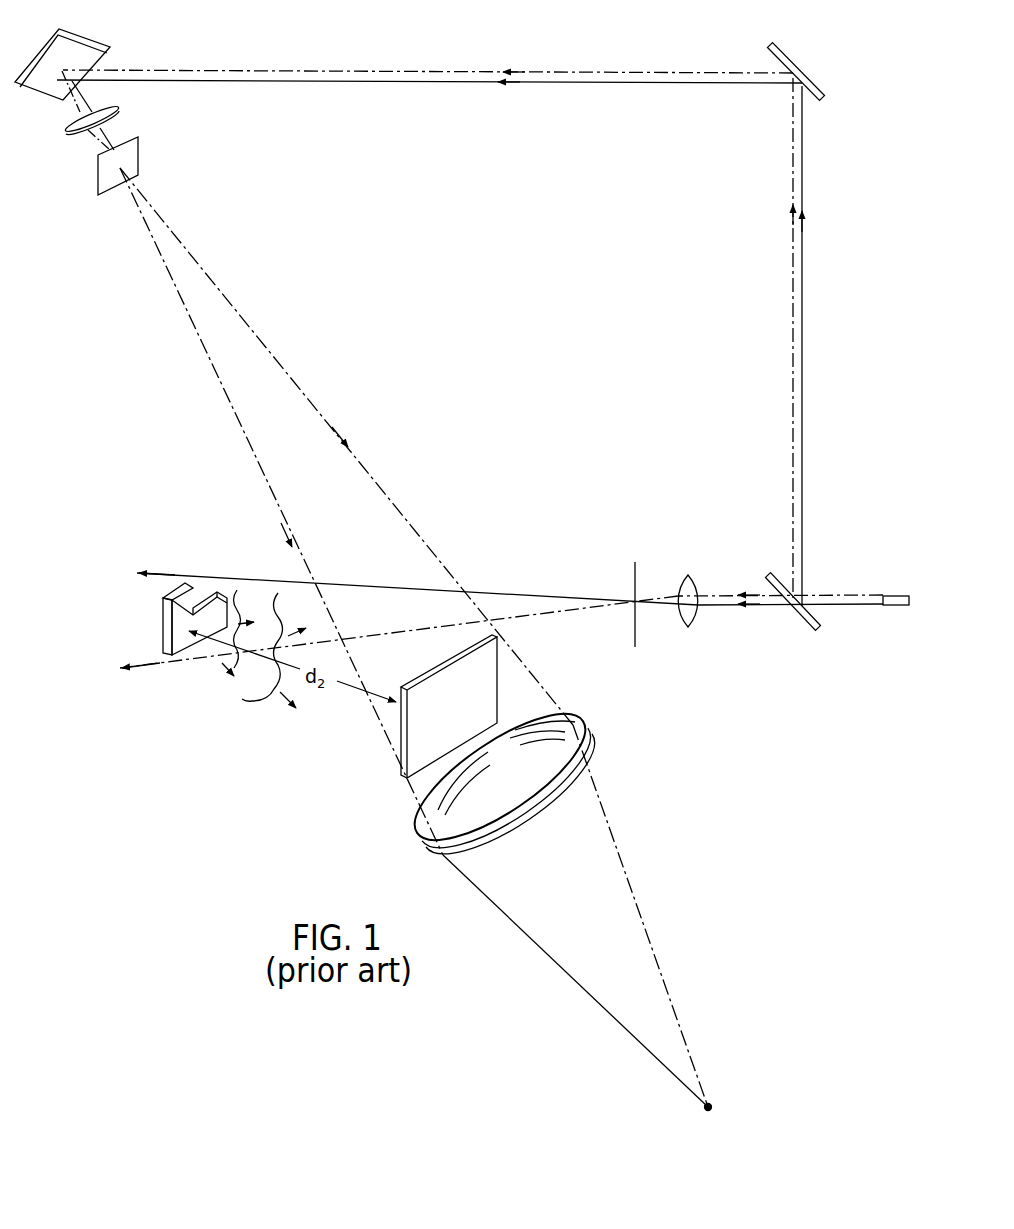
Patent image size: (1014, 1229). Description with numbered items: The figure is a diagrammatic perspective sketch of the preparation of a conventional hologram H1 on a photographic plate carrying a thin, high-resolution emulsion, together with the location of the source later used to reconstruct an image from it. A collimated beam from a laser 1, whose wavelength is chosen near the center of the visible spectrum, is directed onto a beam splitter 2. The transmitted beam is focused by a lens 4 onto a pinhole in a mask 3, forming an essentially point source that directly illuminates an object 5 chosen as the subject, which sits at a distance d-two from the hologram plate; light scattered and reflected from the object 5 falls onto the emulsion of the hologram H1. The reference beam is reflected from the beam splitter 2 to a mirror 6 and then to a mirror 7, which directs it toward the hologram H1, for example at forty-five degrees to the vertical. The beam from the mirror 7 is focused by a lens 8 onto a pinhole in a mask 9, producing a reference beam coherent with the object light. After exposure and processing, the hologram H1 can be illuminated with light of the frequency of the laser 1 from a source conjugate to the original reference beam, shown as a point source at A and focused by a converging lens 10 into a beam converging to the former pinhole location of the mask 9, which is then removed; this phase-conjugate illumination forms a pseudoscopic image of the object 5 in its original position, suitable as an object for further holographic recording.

The laser 1 is at (896, 606).
The beam splitter 2 is at (808, 628).
The mask 3 is at (637, 627).
The lens 4 is at (699, 612).
The object 5 is at (175, 633).
The mirror 6 is at (790, 62).
The mirror 7 is at (78, 41).
The lens 8 is at (111, 112).
The mask 9 is at (131, 159).
The converging lens 10 is at (590, 727).
The hologram H1 is at (423, 760).
The point source A is at (710, 1104).